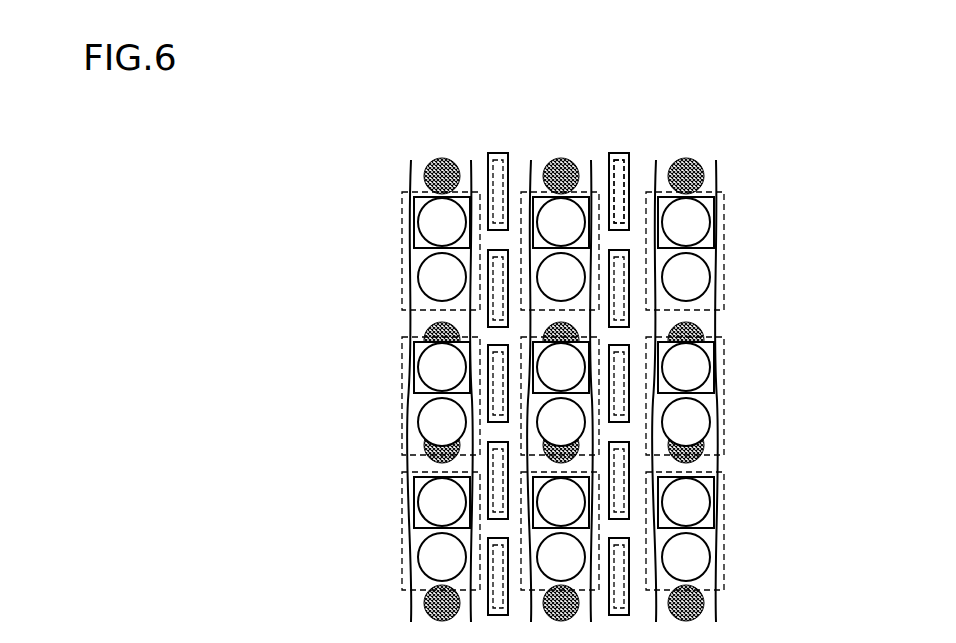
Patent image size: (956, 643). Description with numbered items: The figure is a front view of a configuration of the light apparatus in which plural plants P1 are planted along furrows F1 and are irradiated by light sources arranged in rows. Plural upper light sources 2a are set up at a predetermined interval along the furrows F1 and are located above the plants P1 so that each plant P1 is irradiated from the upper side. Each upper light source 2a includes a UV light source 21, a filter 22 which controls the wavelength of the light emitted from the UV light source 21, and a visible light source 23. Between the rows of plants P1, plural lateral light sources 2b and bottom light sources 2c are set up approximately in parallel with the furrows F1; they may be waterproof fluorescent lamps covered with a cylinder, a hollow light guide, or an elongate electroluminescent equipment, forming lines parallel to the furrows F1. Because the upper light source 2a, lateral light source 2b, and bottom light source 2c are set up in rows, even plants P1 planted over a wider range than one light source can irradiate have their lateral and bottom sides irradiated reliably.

The plant P1 is at (440, 160).
The furrow F1 is at (529, 172).
The upper light source 2a is at (410, 194).
The lateral light source 2b is at (628, 155).
The bottom light source 2c is at (608, 168).
The UV light source 21 is at (425, 228).
The filter 22 is at (425, 251).
The visible light source 23 is at (428, 292).